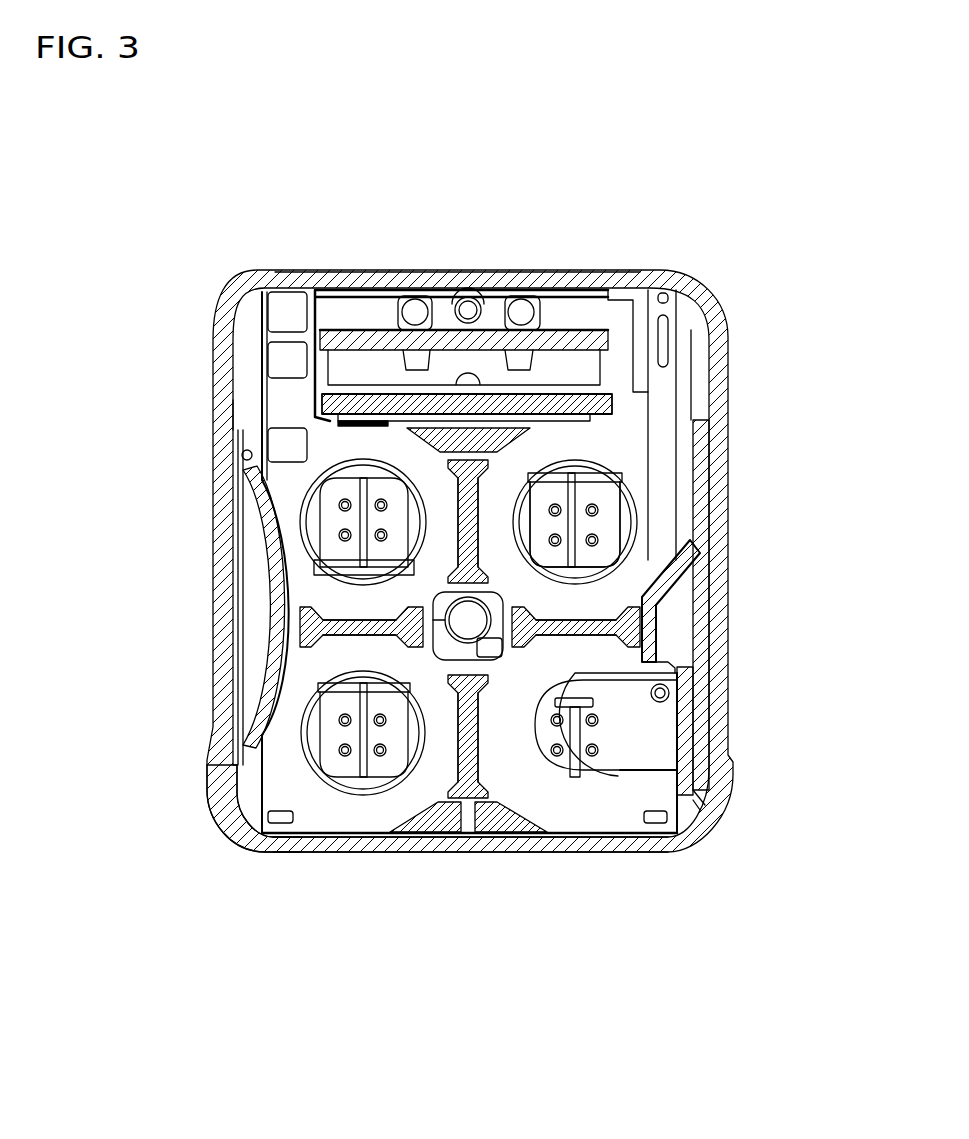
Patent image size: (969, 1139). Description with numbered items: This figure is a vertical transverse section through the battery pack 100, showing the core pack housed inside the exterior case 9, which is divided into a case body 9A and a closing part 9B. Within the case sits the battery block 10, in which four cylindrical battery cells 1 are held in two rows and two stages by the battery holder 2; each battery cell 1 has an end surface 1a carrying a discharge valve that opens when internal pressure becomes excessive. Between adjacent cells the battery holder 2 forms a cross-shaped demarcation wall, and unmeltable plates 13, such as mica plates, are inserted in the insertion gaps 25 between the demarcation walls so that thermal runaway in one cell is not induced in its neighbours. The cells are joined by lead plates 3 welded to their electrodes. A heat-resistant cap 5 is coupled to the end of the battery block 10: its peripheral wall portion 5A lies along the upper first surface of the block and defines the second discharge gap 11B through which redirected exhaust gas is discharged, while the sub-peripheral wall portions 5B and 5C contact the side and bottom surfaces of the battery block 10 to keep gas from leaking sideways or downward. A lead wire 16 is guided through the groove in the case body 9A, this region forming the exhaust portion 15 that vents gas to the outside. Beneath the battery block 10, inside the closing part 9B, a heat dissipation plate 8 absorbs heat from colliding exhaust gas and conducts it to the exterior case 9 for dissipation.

The battery pack 100 is at (705, 182).
The exterior case 9 is at (703, 283).
The case body 9A is at (217, 440).
The closing part 9B is at (277, 870).
The exhaust portion 15 is at (540, 290).
The heat-resistant cap 5 is at (818, 345).
The peripheral wall portion 5A is at (533, 392).
The sub-peripheral wall portion 5B is at (652, 583).
The sub-peripheral wall portion 5C is at (487, 837).
The lead plate 3 is at (600, 487).
The battery cell 1 is at (523, 737).
The end surface 1a is at (623, 511).
The battery holder 2 is at (318, 475).
The battery block 10 is at (240, 410).
The second discharge gap 11B is at (448, 433).
The unmeltable plate 13 is at (610, 600).
The lead wire 16 is at (520, 287).
The insertion gap 25 is at (470, 280).
The heat dissipation plate 8 is at (318, 843).